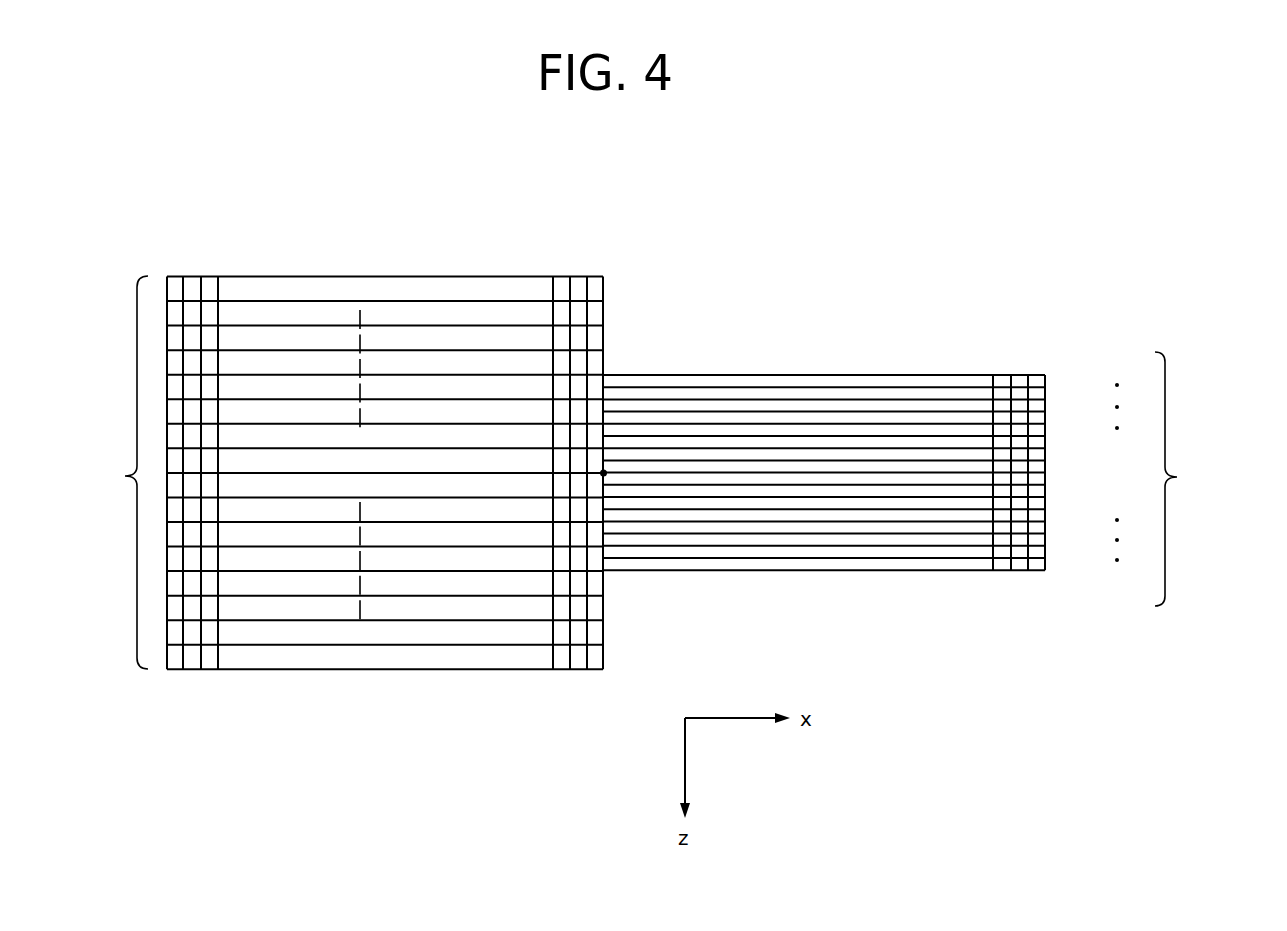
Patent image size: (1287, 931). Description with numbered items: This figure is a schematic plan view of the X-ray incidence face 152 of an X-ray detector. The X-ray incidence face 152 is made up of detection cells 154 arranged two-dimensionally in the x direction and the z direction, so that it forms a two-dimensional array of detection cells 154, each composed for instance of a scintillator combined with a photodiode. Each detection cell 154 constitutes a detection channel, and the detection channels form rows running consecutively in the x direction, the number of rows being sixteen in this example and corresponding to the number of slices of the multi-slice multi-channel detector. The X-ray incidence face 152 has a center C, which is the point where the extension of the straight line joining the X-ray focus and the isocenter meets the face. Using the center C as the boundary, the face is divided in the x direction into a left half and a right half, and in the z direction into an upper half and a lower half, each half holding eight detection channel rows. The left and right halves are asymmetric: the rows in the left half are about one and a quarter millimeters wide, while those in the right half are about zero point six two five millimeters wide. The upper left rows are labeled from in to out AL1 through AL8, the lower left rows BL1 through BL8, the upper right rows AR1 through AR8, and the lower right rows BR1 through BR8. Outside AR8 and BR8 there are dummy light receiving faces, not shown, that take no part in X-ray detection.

The X-ray incidence face 152 is at (495, 178).
The detection cell 154 is at (598, 289).
The center C is at (605, 471).
The upper left detection channel row AL8 is at (385, 291).
The upper left detection channel row AL1 is at (385, 462).
The lower left detection channel row BL1 is at (385, 486).
The lower left detection channel row BL8 is at (385, 657).
The upper right detection channel row AR8 is at (1038, 380).
The upper right detection channel row AR1 is at (1038, 468).
The lower right detection channel row BR1 is at (1038, 478).
The lower right detection channel row BR8 is at (1038, 567).